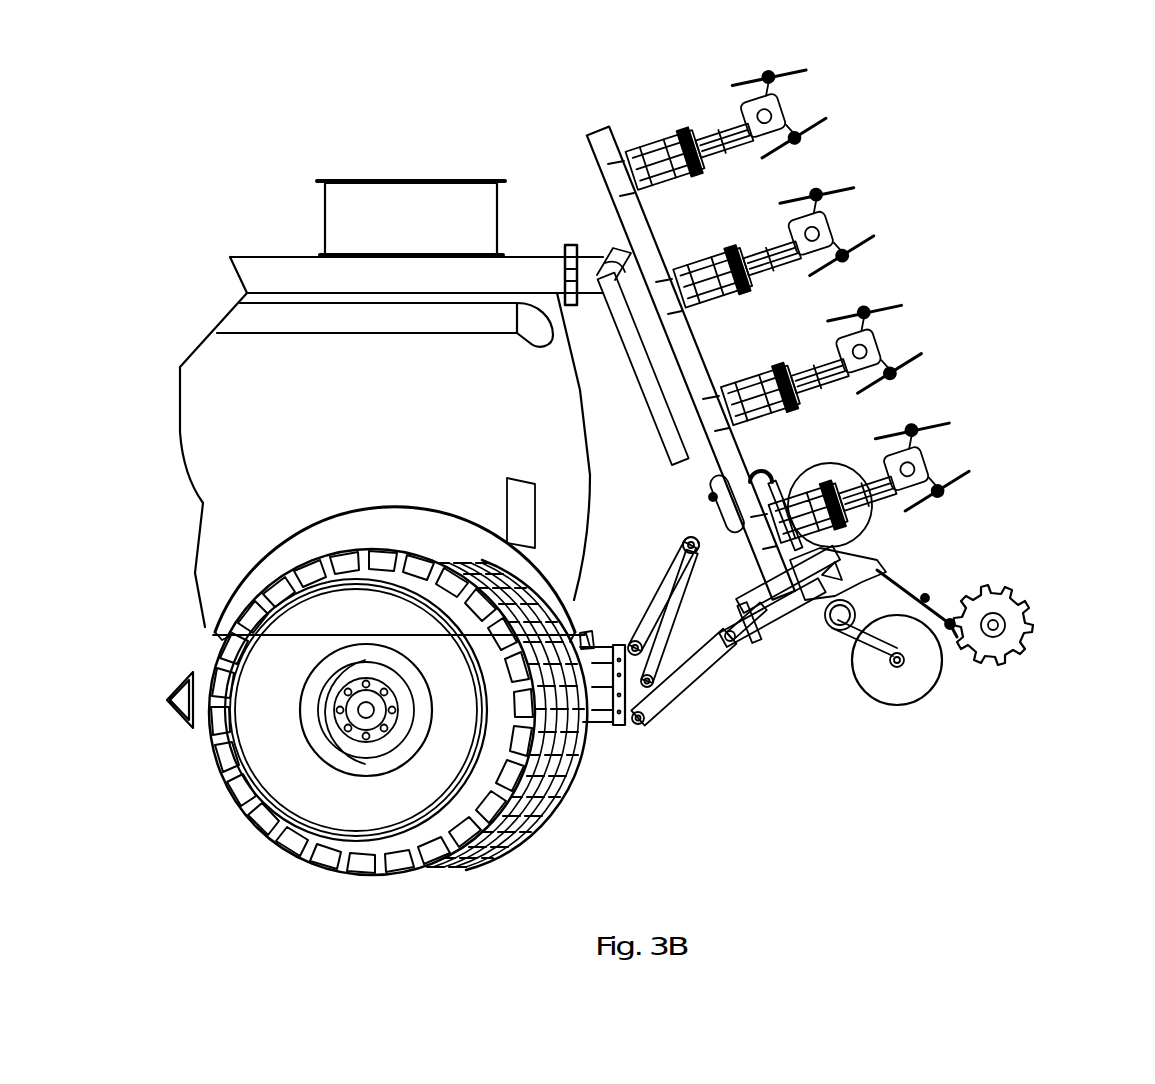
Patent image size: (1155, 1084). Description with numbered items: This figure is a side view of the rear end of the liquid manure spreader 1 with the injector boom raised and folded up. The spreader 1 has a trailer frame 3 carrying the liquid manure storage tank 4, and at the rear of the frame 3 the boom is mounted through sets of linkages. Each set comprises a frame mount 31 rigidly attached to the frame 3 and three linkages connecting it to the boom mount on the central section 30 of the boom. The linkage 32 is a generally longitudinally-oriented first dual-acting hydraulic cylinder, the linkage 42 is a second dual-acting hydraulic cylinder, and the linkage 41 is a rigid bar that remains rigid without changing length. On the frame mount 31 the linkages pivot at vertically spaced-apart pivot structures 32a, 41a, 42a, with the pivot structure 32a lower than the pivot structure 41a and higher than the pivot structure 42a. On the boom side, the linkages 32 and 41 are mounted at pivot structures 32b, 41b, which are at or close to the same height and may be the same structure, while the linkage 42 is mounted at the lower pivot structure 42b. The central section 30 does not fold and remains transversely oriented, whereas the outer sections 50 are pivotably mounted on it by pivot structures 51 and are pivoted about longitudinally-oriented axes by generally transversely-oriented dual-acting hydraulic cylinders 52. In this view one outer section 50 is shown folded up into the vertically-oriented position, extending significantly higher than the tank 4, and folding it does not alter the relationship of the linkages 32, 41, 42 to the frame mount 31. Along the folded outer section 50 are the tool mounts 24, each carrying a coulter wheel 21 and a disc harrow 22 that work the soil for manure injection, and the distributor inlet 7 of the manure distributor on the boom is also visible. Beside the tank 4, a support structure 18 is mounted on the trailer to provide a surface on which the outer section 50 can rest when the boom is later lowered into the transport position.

The liquid manure spreader 1 is at (1033, 322).
The trailer frame 3 is at (588, 634).
The liquid manure storage tank 4 is at (218, 362).
The distributor inlet 7 is at (752, 466).
The support structures 18 is at (520, 496).
The coulter wheels 21 is at (790, 72).
The disc harrows 22 is at (724, 148).
The tool mounts 24 is at (722, 134).
The central section 30 is at (767, 612).
The frame mount 31 is at (620, 726).
The first dual-acting hydraulic cylinder 32 is at (665, 640).
The pivot structure 32a is at (651, 688).
The pivot structure 32b is at (688, 538).
The rigid linkage 41 is at (666, 582).
The pivot structure 41a is at (634, 641).
The pivot structure 41b is at (691, 545).
The second dual-acting hydraulic cylinder 42 is at (690, 690).
The pivot structure 42a is at (640, 725).
The pivot structure 42b is at (724, 643).
The outer sections 50 is at (598, 138).
The pivot structures 51 is at (797, 601).
The dual-acting hydraulic cylinders 52 is at (712, 515).